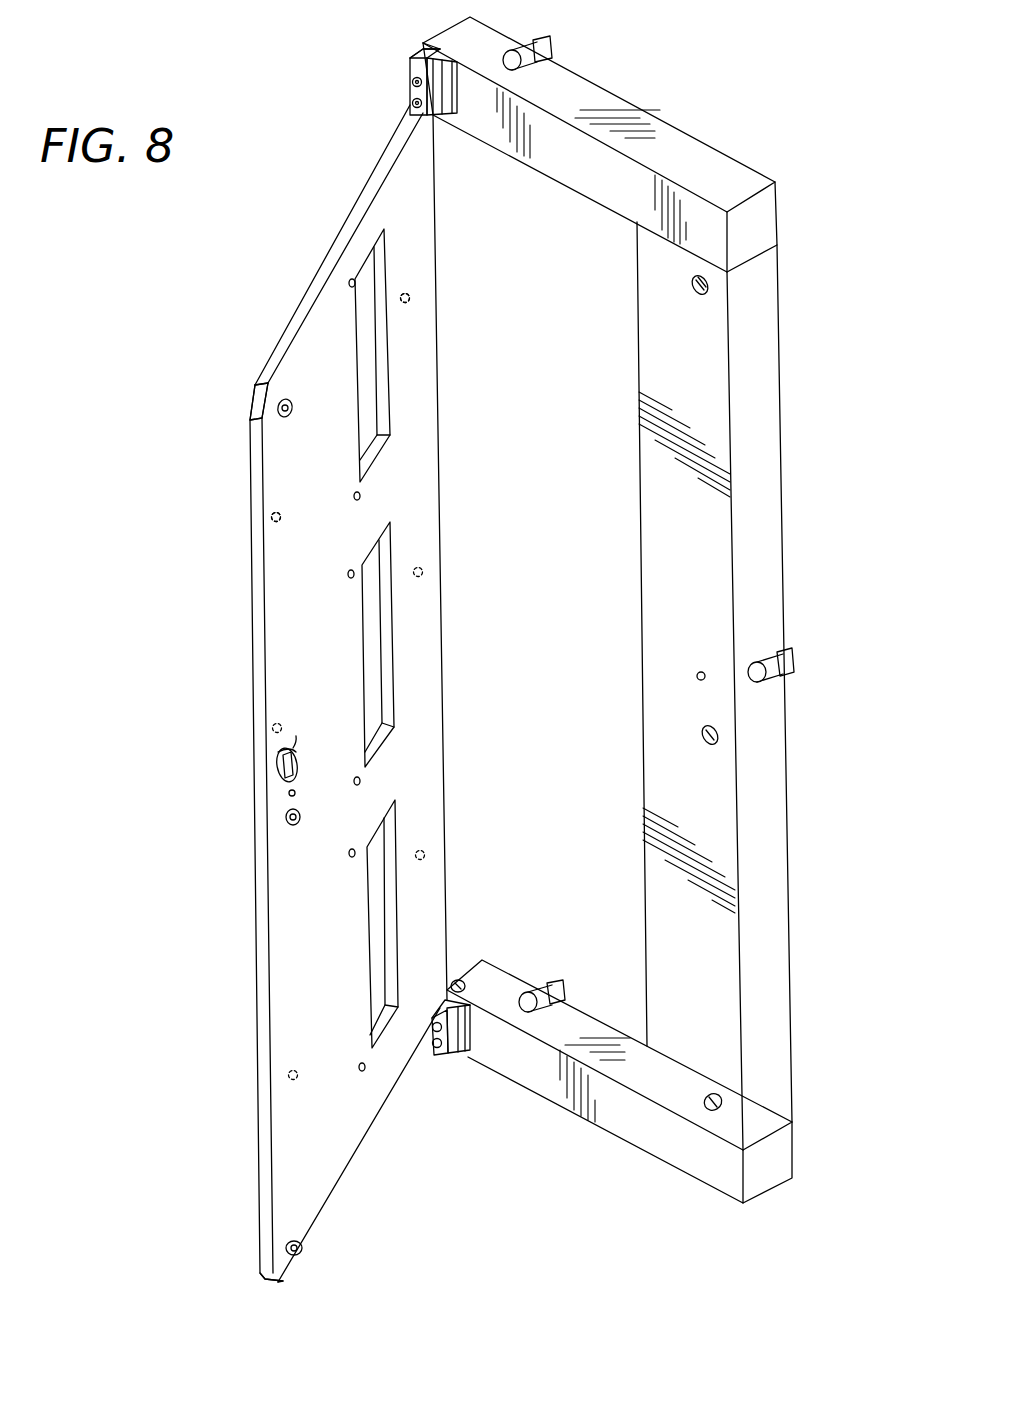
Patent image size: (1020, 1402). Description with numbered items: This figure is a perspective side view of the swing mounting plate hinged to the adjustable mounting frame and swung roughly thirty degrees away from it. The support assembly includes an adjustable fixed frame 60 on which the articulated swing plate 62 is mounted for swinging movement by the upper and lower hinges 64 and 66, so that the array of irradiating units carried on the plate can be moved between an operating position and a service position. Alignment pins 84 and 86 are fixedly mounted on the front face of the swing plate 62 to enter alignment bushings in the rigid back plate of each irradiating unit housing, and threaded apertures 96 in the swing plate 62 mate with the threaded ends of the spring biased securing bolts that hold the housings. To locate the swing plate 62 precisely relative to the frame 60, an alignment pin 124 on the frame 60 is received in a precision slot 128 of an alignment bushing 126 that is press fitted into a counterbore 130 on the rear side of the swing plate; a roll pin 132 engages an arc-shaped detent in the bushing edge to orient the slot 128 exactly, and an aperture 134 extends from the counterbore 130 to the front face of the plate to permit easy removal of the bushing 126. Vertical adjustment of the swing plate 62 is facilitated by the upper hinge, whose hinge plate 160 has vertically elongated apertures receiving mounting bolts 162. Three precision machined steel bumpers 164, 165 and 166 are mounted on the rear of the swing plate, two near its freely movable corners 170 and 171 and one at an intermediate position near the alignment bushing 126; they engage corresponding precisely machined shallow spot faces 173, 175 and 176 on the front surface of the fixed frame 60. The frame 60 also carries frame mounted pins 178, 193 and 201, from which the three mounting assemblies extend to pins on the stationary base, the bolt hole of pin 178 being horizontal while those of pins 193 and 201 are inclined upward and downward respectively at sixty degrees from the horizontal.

The adjustable fixed frame 60 is at (632, 591).
The articulated plate 62 is at (248, 860).
The upper hinge 64 is at (448, 1068).
The lower hinge 66 is at (370, 77).
The alignment pin 84 is at (278, 510).
The alignment pin 86 is at (410, 296).
The threaded apertures 96 is at (352, 286).
The alignment pin 124 is at (699, 670).
The alignment bushing 126 is at (295, 735).
The precision slot 128 is at (297, 780).
The counterbore 130 is at (280, 776).
The roll pin 132 is at (297, 752).
The aperture 134 is at (277, 752).
The hinge plate 160 is at (423, 50).
The mounting bolts 162 is at (410, 85).
The bumper 164 is at (291, 418).
The bumper 165 is at (296, 826).
The bumper 166 is at (318, 1232).
The freely movable corner 170 is at (248, 400).
The freely movable corner 171 is at (276, 1284).
The spot face 173 is at (700, 296).
The spot face 175 is at (714, 746).
The spot face 176 is at (711, 1097).
The frame mounted pin 178 is at (787, 657).
The frame mounted pin 193 is at (553, 988).
The frame mounted pin 201 is at (548, 55).